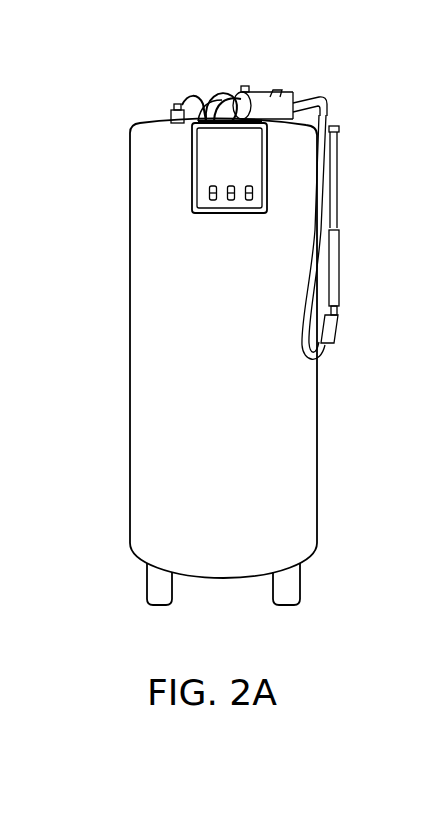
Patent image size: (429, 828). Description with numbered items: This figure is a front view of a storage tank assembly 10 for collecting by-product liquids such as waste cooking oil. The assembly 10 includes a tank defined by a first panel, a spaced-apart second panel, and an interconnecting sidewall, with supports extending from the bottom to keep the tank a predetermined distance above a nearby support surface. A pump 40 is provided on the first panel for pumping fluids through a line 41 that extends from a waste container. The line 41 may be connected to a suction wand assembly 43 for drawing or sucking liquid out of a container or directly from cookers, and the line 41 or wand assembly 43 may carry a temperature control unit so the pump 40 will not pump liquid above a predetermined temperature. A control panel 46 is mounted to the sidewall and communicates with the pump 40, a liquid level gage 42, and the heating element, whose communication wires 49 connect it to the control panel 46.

The storage tank assembly 10 is at (318, 453).
The pump 40 is at (290, 97).
The line 41 is at (330, 175).
The liquid level gage 42 is at (170, 104).
The suction wand assembly 43 is at (339, 270).
The control panel 46 is at (205, 163).
The communication wires 49 is at (213, 100).